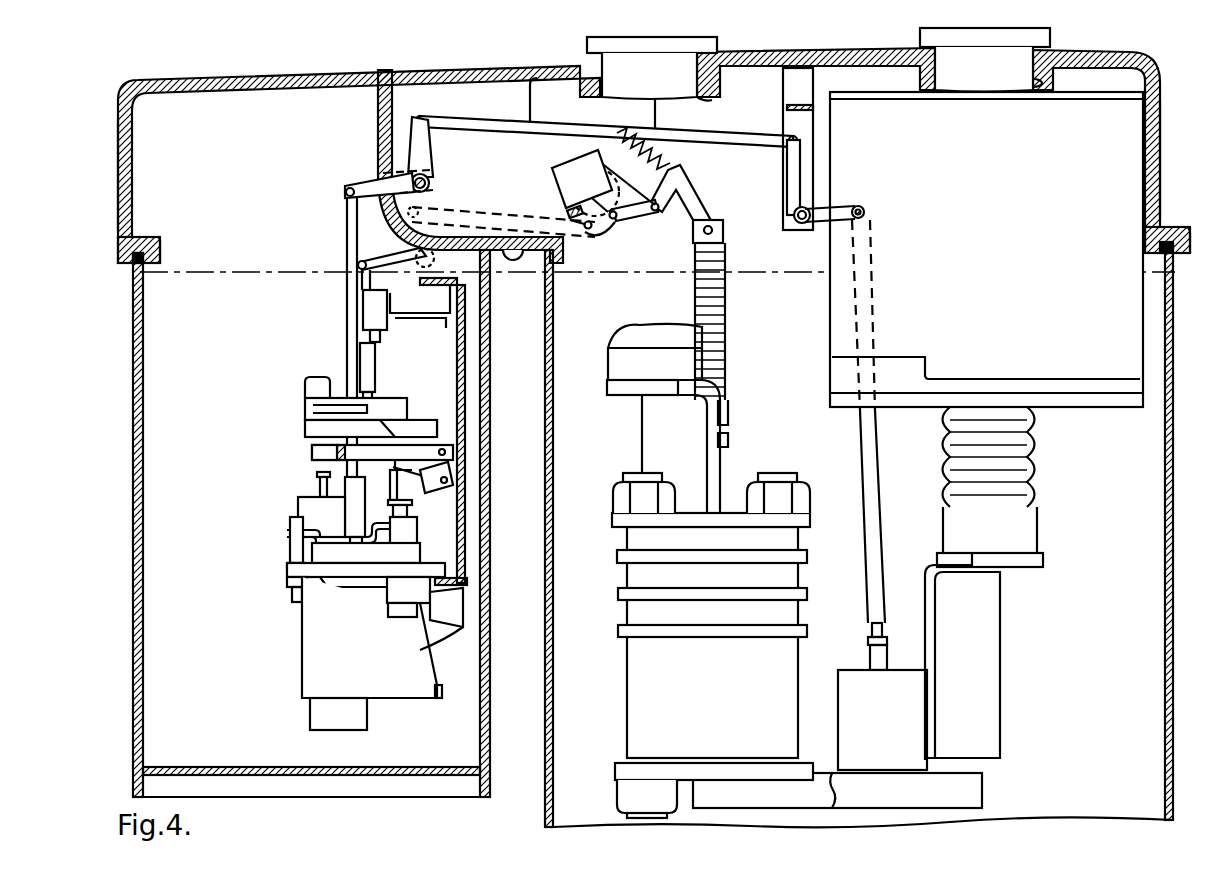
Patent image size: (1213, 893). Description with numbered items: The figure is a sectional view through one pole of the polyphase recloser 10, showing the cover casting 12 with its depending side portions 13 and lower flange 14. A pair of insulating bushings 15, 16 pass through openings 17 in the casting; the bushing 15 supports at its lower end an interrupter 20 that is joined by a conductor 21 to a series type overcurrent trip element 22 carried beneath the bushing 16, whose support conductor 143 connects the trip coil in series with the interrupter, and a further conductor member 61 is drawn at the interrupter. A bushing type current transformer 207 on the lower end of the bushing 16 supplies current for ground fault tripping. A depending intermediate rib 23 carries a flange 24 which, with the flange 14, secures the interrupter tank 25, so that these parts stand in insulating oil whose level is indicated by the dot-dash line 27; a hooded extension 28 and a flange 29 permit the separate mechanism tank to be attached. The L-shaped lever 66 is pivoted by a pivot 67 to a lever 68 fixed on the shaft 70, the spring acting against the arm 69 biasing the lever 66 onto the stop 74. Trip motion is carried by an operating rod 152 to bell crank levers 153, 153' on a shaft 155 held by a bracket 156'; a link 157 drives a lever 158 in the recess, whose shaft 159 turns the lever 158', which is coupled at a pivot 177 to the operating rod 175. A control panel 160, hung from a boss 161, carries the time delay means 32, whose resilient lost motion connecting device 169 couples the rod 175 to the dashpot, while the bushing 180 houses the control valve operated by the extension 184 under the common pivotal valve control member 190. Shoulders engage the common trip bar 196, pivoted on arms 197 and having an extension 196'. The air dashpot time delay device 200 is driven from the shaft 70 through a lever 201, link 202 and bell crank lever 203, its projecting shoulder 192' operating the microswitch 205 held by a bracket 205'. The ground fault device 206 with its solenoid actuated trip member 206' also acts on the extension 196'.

The polyphase recloser 10 is at (1184, 81).
The cover casting 12 is at (1105, 58).
The depending side portion 13 is at (118, 200).
The flange 14 is at (132, 265).
The insulating bushing 15 is at (587, 47).
The insulating bushing 16 is at (1050, 38).
The opening 17 is at (700, 100).
The interrupter 20 is at (600, 699).
The conductor 21 is at (822, 770).
The series type overcurrent trip element 22 is at (870, 714).
The intermediate rib 23 is at (524, 100).
The flange 24 is at (513, 262).
The interrupter tank 25 is at (1173, 366).
The oil level 27 is at (1012, 278).
The hooded extension 28 is at (392, 116).
The flange 29 is at (133, 415).
The time delay means 32 is at (255, 557).
The conductor bracket 61 is at (642, 432).
The L-shaped lever 66 is at (690, 190).
The pivot 67 is at (617, 222).
The lever 68 is at (632, 184).
The arm 69 is at (630, 124).
The shaft 70 is at (588, 170).
The stop 74 is at (660, 209).
The support conductor 143 is at (1000, 624).
The operating rod 152 is at (883, 517).
The bell crank lever 153 is at (875, 196).
The bell crank lever 153' is at (771, 177).
The shaft 155 is at (802, 224).
The bracket 156' is at (616, 149).
The link 157 is at (596, 124).
The lever 158 is at (436, 147).
The lever 158' is at (380, 176).
The shaft 159 is at (428, 186).
The control panel 160 is at (457, 366).
The boss 161 is at (428, 294).
The resilient lost motion connecting device 169 is at (345, 512).
The operating rod 175 is at (347, 248).
The pivot 177 is at (345, 192).
The bushing 180 is at (417, 532).
The extension 184 is at (390, 490).
The pivotal valve control member 190 is at (400, 482).
The projecting shoulder 192' is at (392, 368).
The common trip bar 196 is at (379, 446).
The extension 196' is at (301, 454).
The arm 197 is at (412, 428).
The air dashpot time delay device 200 is at (305, 413).
The lever 201 is at (590, 246).
The link 202 is at (566, 200).
The bell crank lever 203 is at (400, 256).
The microswitch 205 is at (410, 292).
The bracket 205' is at (420, 329).
The ground fault device 206 is at (362, 653).
The solenoid actuated trip member 206' is at (300, 484).
The bushing type current transformer 207 is at (830, 318).